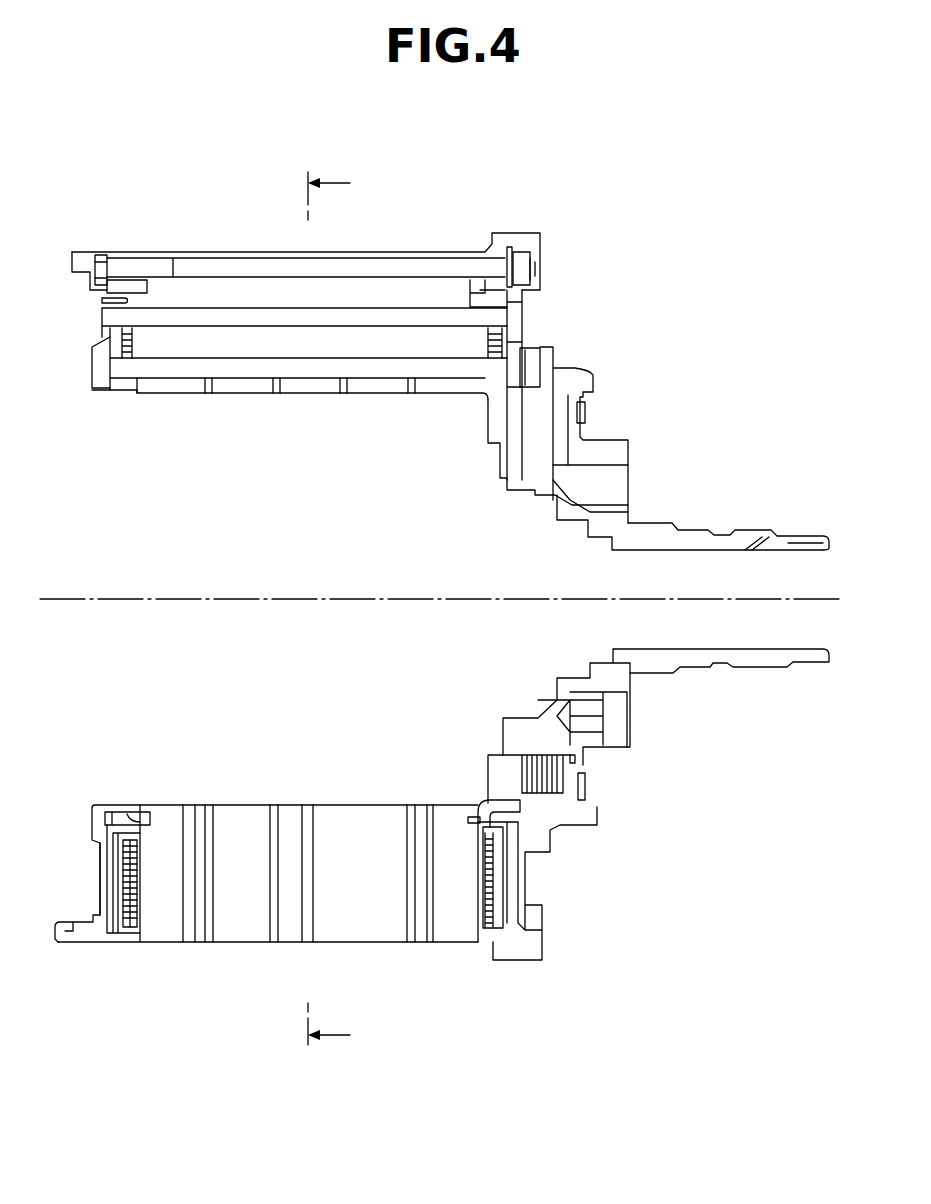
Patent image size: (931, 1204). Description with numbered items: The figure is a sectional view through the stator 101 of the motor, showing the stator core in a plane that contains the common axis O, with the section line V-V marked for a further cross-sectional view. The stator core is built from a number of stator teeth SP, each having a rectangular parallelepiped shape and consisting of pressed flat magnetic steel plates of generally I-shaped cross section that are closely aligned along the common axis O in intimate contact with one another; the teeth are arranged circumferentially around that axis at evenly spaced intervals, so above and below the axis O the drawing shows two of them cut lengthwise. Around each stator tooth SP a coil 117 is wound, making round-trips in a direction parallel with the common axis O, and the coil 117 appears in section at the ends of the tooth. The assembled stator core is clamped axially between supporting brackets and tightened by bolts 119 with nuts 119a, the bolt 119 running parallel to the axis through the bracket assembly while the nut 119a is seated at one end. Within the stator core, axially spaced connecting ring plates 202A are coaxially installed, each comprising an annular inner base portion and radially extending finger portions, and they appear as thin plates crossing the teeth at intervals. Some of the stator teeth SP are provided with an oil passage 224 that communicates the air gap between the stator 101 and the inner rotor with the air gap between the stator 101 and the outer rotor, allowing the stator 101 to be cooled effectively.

The bolt 119 is at (423, 268).
The nut 119a is at (103, 262).
The stator tooth SP is at (210, 250).
The connecting ring plate 202A is at (207, 393).
The stator 101 is at (622, 399).
The common axis O is at (57, 597).
The section line V- V is at (343, 610).
The coil 117 is at (118, 917).
The oil passage 224 is at (435, 905).